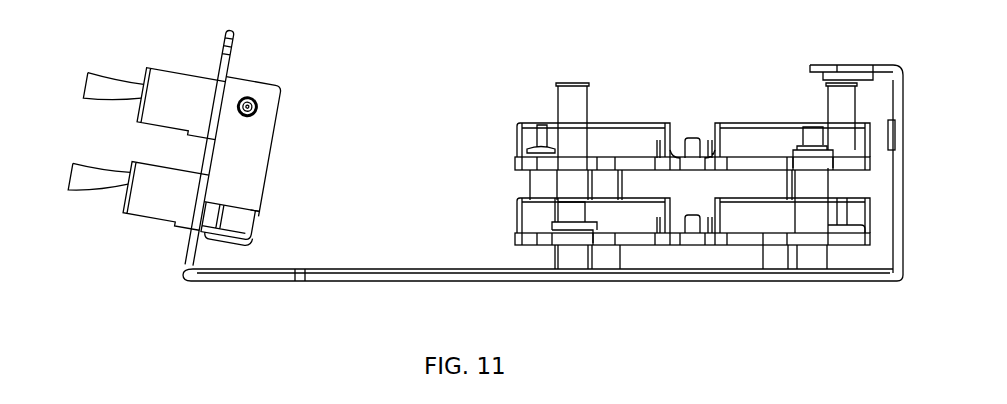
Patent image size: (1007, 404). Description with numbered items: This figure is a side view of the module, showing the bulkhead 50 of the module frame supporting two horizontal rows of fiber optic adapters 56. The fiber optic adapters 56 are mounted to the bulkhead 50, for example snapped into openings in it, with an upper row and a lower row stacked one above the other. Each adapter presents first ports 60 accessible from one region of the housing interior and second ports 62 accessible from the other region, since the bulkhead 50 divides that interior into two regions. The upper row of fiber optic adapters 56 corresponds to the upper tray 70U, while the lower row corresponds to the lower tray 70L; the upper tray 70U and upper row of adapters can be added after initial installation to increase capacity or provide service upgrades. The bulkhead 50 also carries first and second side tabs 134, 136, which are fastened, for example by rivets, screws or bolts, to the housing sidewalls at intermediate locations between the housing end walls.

The bulkhead 50 is at (182, 257).
The fiber optic adapters 56 is at (168, 92).
The first ports 60 is at (257, 216).
The second ports 62 is at (118, 207).
The upper tray 70U is at (622, 123).
The lower circuit board 70L is at (636, 255).
The first side tab 134 is at (257, 211).
The second side tab 136 is at (262, 93).